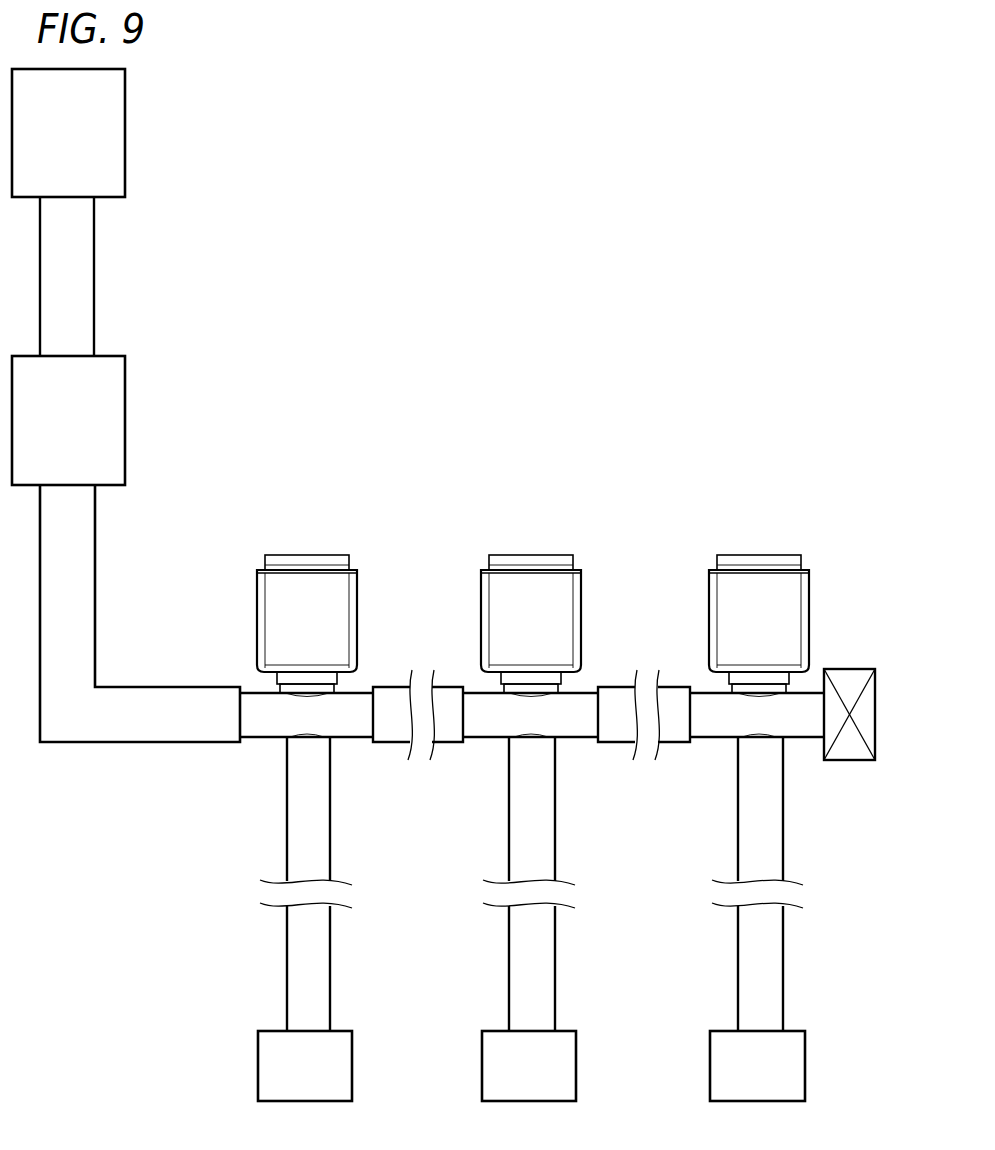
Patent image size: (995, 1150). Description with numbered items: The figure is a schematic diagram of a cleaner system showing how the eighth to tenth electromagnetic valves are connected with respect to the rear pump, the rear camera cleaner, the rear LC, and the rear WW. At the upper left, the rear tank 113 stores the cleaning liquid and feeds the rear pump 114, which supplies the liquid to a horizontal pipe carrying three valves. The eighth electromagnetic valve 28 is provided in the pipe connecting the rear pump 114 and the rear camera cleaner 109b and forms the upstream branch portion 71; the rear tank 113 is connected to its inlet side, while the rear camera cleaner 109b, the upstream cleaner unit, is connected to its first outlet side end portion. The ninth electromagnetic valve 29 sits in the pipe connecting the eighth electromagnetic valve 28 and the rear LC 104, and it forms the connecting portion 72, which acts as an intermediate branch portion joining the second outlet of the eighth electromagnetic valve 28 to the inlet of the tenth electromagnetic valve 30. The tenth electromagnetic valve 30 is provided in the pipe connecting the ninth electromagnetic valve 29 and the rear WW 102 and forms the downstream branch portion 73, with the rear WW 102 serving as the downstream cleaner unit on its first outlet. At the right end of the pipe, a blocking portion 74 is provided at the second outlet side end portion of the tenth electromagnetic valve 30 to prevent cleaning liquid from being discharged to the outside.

The rear tank 113 is at (125, 123).
The rear pump 114 is at (125, 408).
The upstream branch portion 71 is at (310, 527).
The connecting portion 72 is at (532, 527).
The downstream branch portion 73 is at (768, 527).
The eighth electromagnetic valve 28 is at (257, 627).
The ninth electromagnetic valve 29 is at (581, 610).
The tenth electromagnetic valve 30 is at (809, 610).
The blocking portion 74 is at (850, 760).
The rear camera cleaner 109b is at (258, 1068).
The rear LC 104 is at (482, 1066).
The rear WW 102 is at (710, 1062).